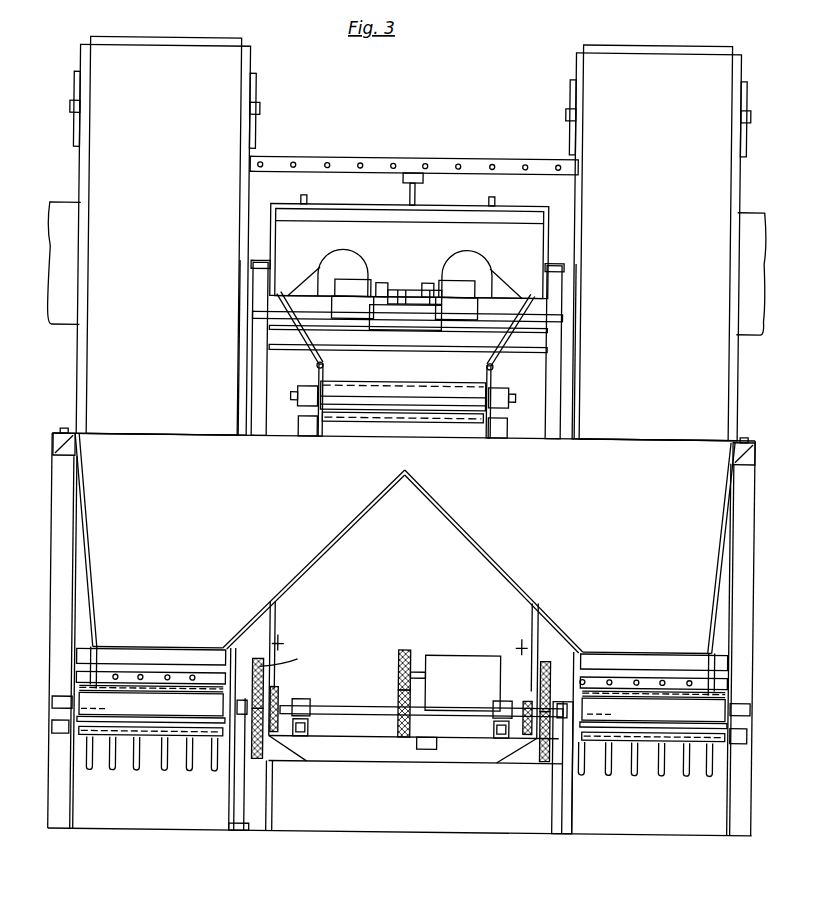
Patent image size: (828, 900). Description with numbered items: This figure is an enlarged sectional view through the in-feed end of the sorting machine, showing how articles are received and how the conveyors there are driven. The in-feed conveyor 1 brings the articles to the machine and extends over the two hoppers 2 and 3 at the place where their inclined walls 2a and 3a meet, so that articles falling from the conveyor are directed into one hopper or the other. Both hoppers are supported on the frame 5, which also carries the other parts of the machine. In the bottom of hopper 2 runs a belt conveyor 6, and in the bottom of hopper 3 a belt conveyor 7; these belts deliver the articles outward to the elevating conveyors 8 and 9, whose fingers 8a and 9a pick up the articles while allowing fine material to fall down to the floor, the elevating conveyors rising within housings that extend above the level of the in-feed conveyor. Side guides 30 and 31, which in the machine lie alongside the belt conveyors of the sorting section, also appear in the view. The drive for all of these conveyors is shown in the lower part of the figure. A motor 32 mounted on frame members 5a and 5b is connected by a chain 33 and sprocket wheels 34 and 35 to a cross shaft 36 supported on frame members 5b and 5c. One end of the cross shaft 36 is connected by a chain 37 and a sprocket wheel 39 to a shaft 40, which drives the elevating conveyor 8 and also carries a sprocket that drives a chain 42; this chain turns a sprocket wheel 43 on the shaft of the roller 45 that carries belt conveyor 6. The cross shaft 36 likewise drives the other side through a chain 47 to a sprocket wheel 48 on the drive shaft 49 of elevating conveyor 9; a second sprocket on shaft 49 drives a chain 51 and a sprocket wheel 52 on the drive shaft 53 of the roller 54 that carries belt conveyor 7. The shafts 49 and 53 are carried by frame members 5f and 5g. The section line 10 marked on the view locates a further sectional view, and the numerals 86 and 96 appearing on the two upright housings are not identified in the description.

The in-feed conveyor 1 is at (386, 386).
The hopper 2 is at (105, 517).
The inclined wall 2a is at (314, 559).
The hopper 3 is at (705, 567).
The inclined wall 3a is at (524, 585).
The frame 5 is at (745, 500).
The frame member 5a is at (428, 750).
The frame member 5b is at (500, 738).
The frame member 5c is at (312, 731).
The frame member 5f is at (63, 737).
The frame member 5g is at (738, 742).
The belt conveyor 6 is at (150, 732).
The belt conveyor 7 is at (617, 740).
The elevating conveyor 8 is at (84, 740).
The fingers 8a is at (166, 768).
The elevating conveyor 9 is at (714, 745).
The fingers 9a is at (665, 770).
The pivot axis 10 is at (401, 654).
The side guide 30 is at (360, 283).
The side guide 31 is at (446, 288).
The motor 32 is at (455, 658).
The chain 33 is at (402, 668).
The sprocket wheel 34 is at (401, 654).
The sprocket wheel 35 is at (400, 700).
The cross shaft 36 is at (370, 707).
The chain 37 is at (282, 700).
The sprocket wheel 39 is at (279, 733).
The shaft 40 is at (298, 704).
The chain 42 is at (288, 655).
The sprocket wheel 43 is at (259, 664).
The roller 45 is at (151, 692).
The chain 47 is at (541, 672).
The sprocket wheel 48 is at (531, 700).
The drive shaft 49 is at (522, 707).
The chain 51 is at (542, 744).
The sprocket wheel 52 is at (548, 772).
The drive shaft 53 is at (258, 757).
The roller 54 is at (653, 698).
The left bin 86 is at (153, 235).
The right bin 96 is at (665, 243).